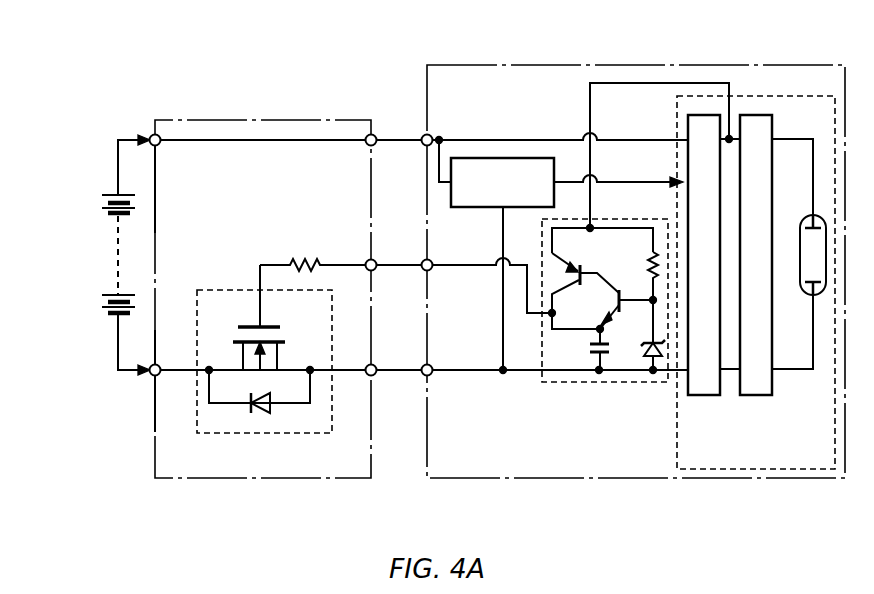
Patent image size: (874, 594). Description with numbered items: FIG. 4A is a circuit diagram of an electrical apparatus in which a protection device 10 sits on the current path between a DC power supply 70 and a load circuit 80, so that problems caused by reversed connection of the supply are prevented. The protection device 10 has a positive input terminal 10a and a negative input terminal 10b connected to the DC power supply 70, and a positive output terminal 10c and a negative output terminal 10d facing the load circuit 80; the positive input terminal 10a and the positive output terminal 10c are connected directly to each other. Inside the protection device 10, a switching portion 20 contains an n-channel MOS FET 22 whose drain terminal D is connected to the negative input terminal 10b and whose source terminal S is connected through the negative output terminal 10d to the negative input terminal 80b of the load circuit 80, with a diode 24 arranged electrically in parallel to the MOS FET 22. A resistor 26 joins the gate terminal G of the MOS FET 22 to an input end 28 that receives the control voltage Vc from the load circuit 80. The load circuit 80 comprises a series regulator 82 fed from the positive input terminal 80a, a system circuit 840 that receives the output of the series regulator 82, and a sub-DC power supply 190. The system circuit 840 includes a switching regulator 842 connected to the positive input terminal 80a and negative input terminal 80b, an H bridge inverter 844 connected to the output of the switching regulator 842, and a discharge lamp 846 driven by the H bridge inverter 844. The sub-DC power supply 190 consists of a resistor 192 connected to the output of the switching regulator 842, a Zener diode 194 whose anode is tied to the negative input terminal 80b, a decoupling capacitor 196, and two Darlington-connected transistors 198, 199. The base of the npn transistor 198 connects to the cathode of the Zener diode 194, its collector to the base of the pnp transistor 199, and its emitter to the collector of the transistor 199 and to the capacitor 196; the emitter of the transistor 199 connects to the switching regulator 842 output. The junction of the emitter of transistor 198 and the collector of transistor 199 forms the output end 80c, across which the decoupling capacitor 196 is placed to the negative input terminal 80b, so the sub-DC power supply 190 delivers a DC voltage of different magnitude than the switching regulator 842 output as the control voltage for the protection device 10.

The protection device 10 is at (200, 480).
The positive input terminal 10a is at (153, 134).
The negative input terminal 10b is at (150, 376).
The positive output terminal 10c is at (374, 146).
The negative output terminal 10d is at (374, 376).
The switching portion 20 is at (256, 343).
The n-channel type MOS FET 22 is at (240, 327).
The diode 24 is at (272, 410).
The resistor 26 is at (306, 261).
The input end 28 is at (374, 271).
The DC power supply 70 is at (118, 252).
The load circuit 80 is at (471, 480).
The positive input terminal 80a is at (422, 135).
The negative input terminal 80b is at (422, 364).
The output end 80c is at (422, 260).
The series regulator 82 is at (475, 208).
The sub-DC power supply 190 is at (605, 321).
The resistor 192 is at (646, 262).
The Zener diode 194 is at (648, 346).
The decoupling capacitor 196 is at (590, 344).
The npn transistor 198 is at (596, 292).
The pnp transistor 199 is at (580, 262).
The system circuit 840 is at (721, 282).
The switching regulator 842 is at (700, 396).
The H bridge inverter 844 is at (757, 396).
The discharge lamp 846 is at (808, 215).